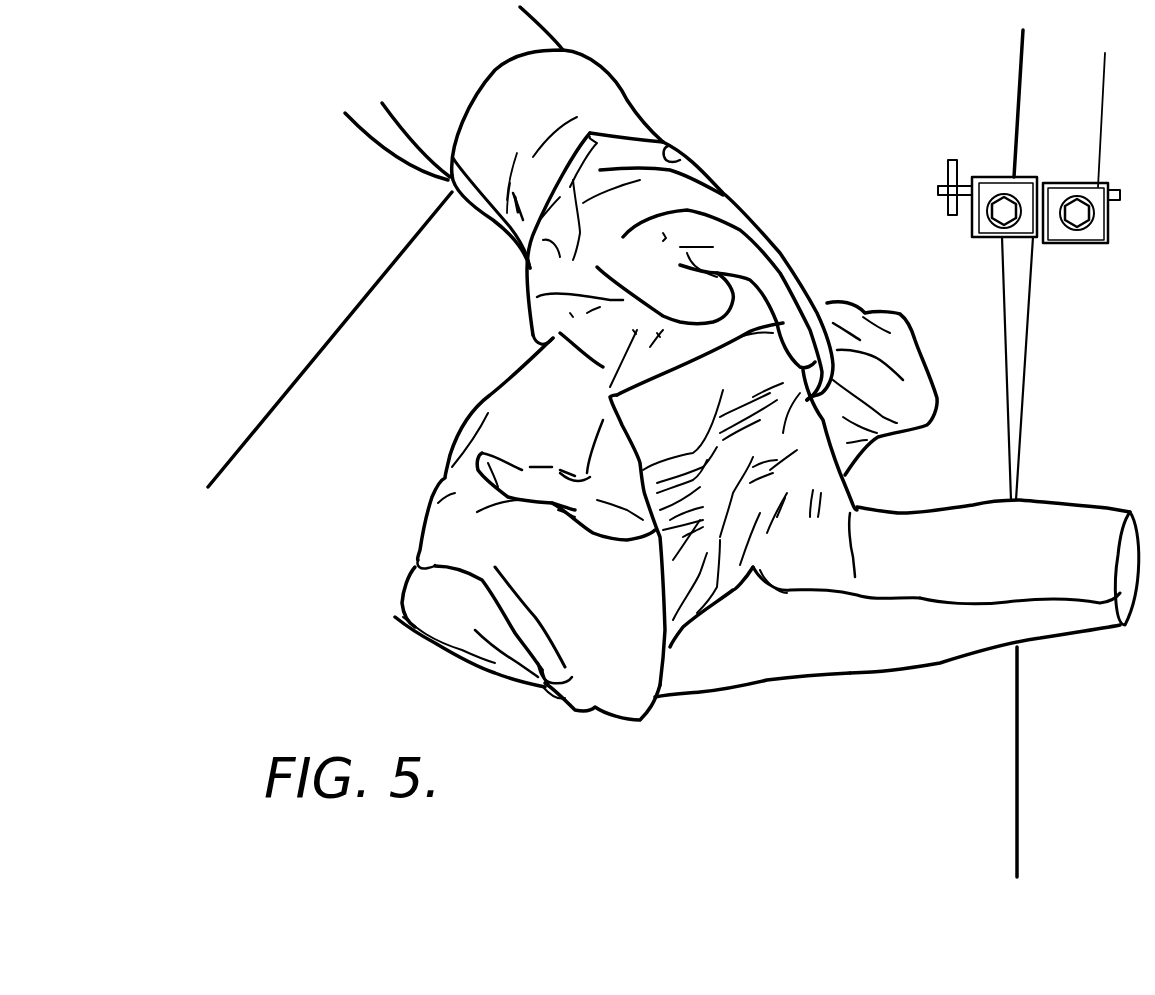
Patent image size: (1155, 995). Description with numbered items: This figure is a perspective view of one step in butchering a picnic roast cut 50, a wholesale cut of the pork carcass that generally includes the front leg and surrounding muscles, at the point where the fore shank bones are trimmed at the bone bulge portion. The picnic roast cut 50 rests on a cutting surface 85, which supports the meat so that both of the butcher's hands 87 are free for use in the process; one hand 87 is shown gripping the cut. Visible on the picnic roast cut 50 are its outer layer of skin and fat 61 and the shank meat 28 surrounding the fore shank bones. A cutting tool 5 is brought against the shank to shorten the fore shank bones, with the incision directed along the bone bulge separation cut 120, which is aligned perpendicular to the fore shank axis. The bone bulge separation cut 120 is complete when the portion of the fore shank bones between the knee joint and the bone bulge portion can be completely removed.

The cutting tool 5 is at (1010, 278).
The shank meat 28 is at (872, 655).
The picnic roast cut 50 is at (428, 447).
The layer of skin and fat 61 is at (542, 684).
The cutting surface 85 is at (396, 270).
The butcher's hands 87 is at (697, 180).
The bone bulge separation cut 120 is at (1020, 495).